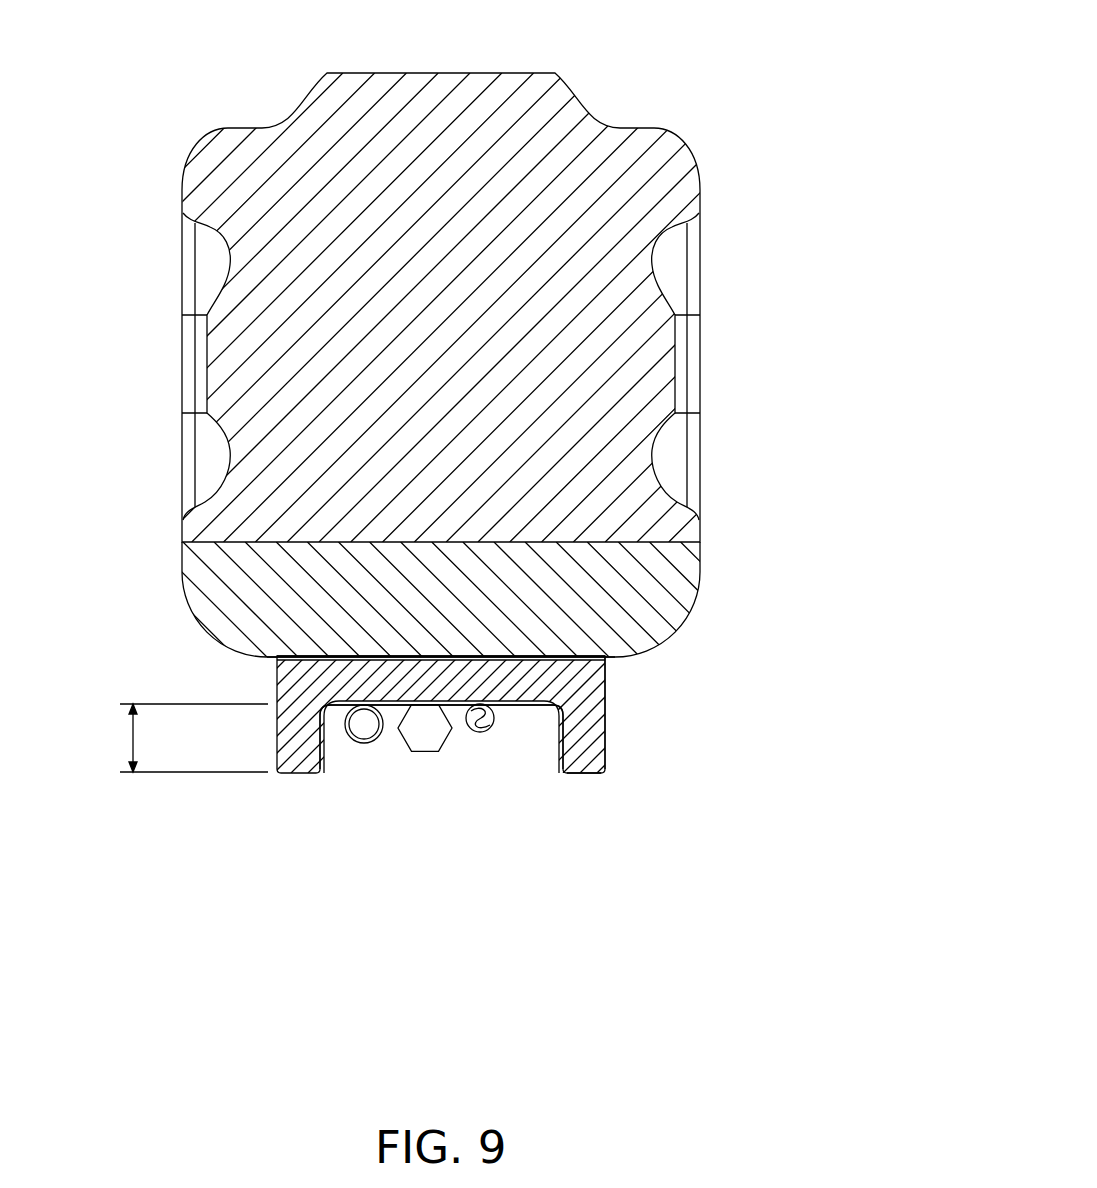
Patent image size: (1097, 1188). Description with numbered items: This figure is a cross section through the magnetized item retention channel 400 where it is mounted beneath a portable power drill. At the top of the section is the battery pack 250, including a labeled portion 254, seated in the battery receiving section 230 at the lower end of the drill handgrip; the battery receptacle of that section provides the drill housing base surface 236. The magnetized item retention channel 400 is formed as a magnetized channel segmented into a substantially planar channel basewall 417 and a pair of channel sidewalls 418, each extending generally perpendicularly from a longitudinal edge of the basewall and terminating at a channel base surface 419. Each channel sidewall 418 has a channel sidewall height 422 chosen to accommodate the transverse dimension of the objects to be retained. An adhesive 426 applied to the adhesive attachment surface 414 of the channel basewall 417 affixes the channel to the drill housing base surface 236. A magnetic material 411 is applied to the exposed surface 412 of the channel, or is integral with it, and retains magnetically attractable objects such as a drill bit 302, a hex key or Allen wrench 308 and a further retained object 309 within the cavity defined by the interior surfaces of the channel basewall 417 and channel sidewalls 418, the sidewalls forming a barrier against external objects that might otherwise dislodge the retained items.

The battery pack 250 is at (683, 100).
The liner 254 is at (688, 358).
The battery receiving section 230 is at (683, 616).
The drill housing base surface 236 is at (557, 664).
The adhesive 426 is at (350, 655).
The adhesive attachment surface 414 is at (330, 657).
The channel basewall 417 is at (357, 685).
The magnetized item retention channel 400 is at (275, 778).
The magnetic material 411 is at (547, 706).
The exposed surface 412 is at (523, 707).
The channel sidewall 418 is at (608, 714).
The channel base surface 419 is at (580, 774).
The channel sidewall height 422 is at (133, 738).
The O-ring 309 is at (357, 743).
The hex key or Allen wrench 308 is at (428, 752).
The drill bit 302 is at (480, 732).